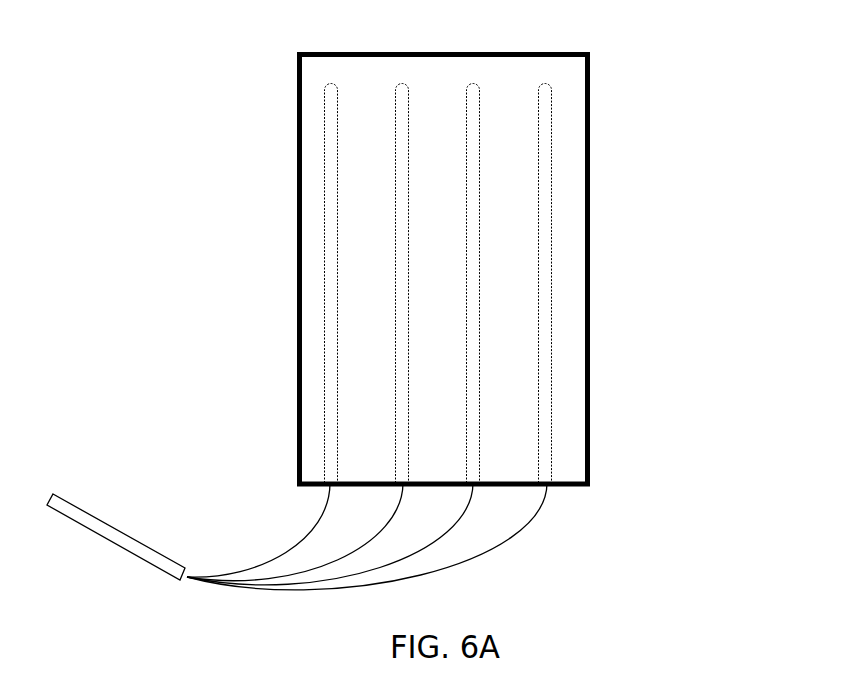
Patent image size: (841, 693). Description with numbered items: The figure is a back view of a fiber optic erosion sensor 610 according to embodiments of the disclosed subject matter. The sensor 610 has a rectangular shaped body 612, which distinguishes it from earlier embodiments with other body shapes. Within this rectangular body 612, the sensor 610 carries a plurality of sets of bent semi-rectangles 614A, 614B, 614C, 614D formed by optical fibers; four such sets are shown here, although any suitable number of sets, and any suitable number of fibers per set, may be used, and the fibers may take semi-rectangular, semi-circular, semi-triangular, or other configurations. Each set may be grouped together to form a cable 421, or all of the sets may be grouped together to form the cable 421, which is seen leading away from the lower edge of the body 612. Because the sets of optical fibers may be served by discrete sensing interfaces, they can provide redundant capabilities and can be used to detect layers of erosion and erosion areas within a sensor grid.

The fiber optic erosion sensor 610 is at (466, 268).
The substrate 612 is at (297, 125).
The bent semi-rectangle 614A is at (325, 284).
The bent semi-rectangle 614B is at (408, 285).
The bent semi-rectangle 614C is at (467, 285).
The bent semi-rectangle 614D is at (537, 285).
The cable 421 is at (95, 515).